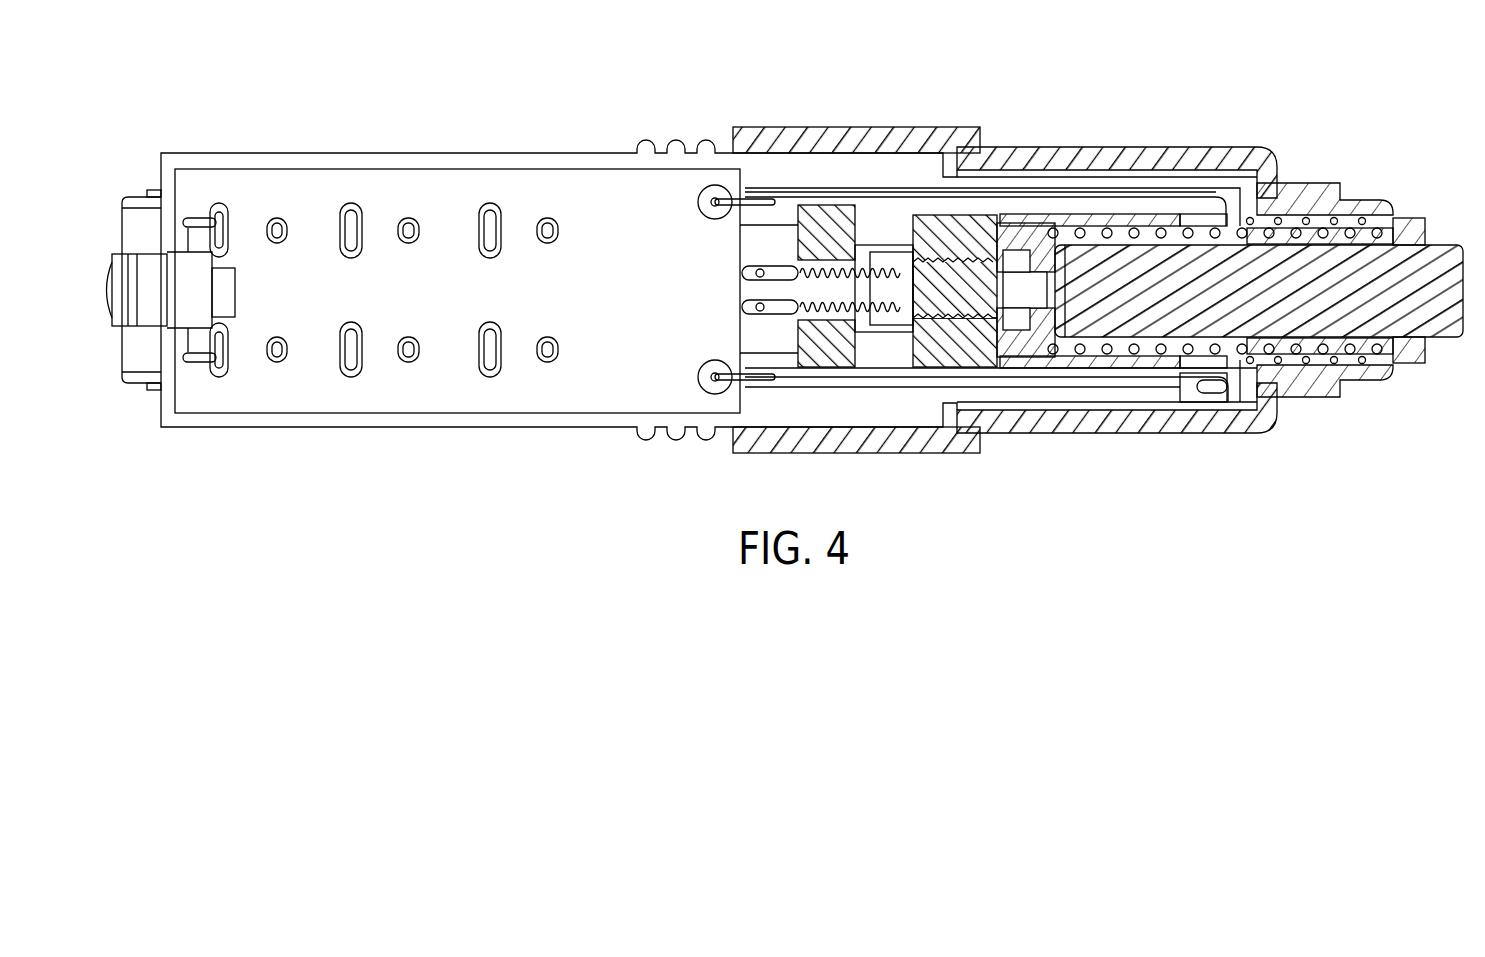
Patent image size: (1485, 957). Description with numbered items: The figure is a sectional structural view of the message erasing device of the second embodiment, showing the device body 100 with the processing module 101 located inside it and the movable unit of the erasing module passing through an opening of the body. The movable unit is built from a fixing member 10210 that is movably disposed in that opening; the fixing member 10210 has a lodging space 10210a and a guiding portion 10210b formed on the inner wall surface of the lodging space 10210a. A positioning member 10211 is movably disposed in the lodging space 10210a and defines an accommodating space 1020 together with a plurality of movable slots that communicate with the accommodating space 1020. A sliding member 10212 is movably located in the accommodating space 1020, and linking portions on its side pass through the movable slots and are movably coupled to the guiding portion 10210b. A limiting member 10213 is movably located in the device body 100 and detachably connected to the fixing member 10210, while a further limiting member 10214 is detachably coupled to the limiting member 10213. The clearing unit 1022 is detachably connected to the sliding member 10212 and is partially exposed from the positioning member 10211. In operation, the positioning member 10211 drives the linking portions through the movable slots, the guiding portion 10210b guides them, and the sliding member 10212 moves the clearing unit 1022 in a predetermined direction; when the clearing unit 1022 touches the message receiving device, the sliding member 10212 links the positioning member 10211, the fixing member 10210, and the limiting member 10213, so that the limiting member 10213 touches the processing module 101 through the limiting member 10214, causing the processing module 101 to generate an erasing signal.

The device body 100 is at (818, 140).
The processing module 101 is at (445, 200).
The accommodating space 1020 is at (1300, 345).
The clearing unit 1022 is at (1440, 262).
The fixing member 10210 is at (1308, 210).
The lodging space 10210a is at (1218, 218).
The guiding portion 10210b is at (1105, 227).
The positioning member 10211 is at (1412, 357).
The sliding member 10212 is at (1062, 290).
The limiting member 10213 is at (945, 337).
The limiting member 10214 is at (962, 288).